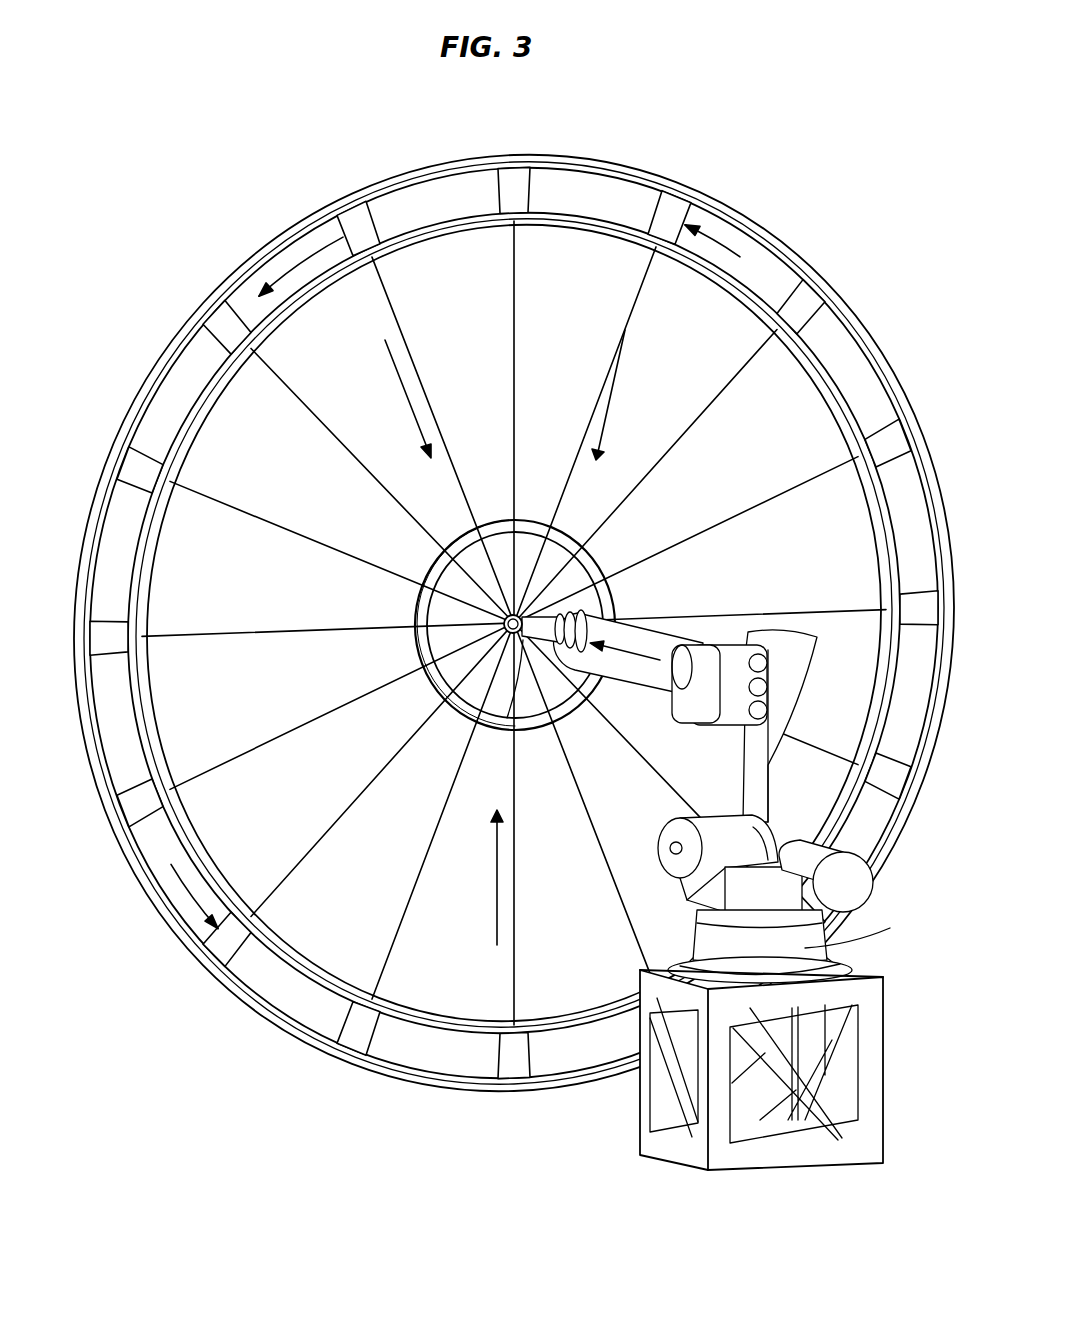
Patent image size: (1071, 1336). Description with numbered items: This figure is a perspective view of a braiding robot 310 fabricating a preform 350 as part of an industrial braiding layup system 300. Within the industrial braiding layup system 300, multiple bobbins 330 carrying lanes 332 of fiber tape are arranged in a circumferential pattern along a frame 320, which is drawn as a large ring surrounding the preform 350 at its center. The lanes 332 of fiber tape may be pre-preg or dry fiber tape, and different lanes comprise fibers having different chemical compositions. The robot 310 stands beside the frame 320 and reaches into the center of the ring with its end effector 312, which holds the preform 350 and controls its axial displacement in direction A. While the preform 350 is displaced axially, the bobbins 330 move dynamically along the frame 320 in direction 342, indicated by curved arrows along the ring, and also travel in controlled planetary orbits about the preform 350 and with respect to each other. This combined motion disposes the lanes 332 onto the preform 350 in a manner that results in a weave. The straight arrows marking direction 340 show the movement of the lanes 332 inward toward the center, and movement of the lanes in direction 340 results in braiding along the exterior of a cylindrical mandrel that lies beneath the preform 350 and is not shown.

The industrial braiding layup system 300 is at (141, 175).
The robot 310 is at (805, 948).
The end effector 312 is at (600, 600).
The frame 320 is at (890, 362).
The bobbins 330 is at (883, 440).
The lanes of fiber tape 332 is at (822, 612).
The direction of lane movement 340 is at (396, 385).
The direction of bobbin movement along frame 342 is at (288, 268).
The preform 350 is at (513, 700).